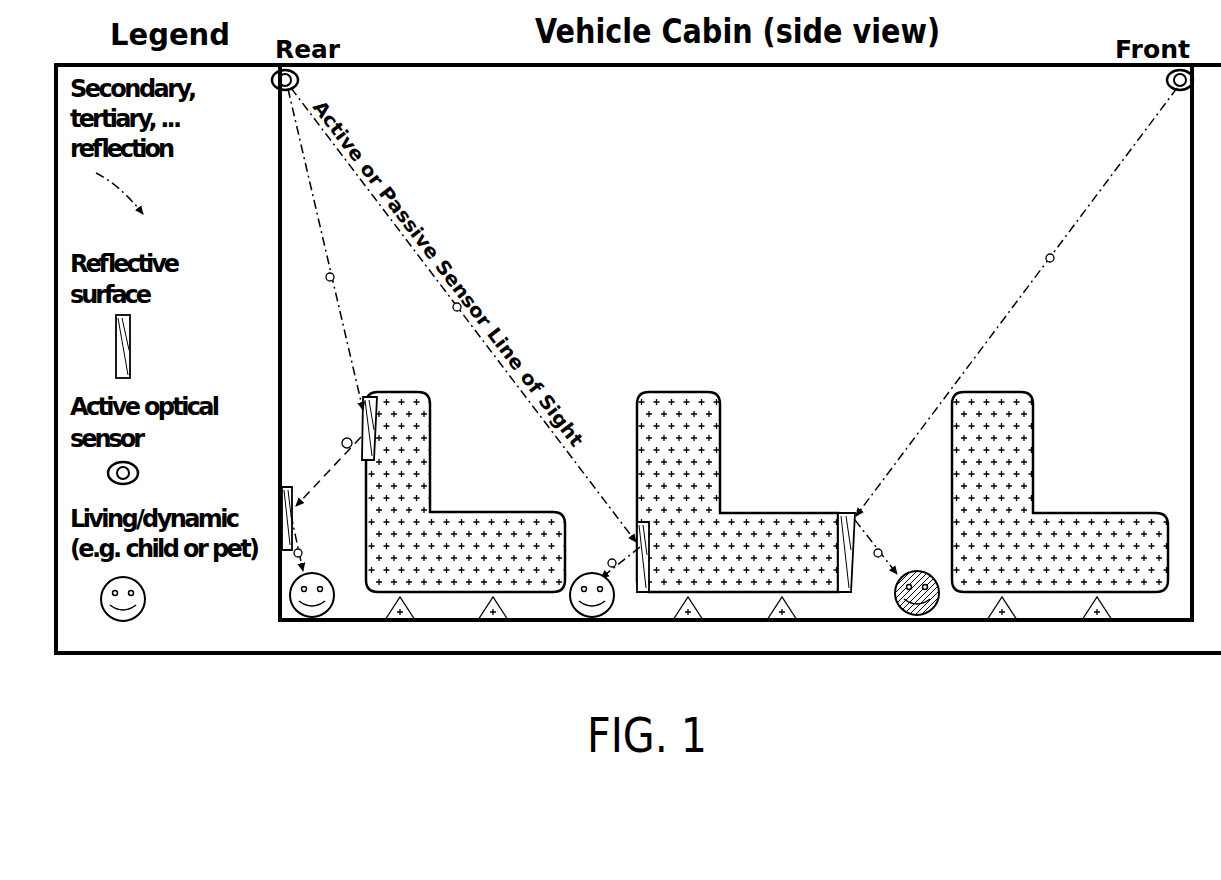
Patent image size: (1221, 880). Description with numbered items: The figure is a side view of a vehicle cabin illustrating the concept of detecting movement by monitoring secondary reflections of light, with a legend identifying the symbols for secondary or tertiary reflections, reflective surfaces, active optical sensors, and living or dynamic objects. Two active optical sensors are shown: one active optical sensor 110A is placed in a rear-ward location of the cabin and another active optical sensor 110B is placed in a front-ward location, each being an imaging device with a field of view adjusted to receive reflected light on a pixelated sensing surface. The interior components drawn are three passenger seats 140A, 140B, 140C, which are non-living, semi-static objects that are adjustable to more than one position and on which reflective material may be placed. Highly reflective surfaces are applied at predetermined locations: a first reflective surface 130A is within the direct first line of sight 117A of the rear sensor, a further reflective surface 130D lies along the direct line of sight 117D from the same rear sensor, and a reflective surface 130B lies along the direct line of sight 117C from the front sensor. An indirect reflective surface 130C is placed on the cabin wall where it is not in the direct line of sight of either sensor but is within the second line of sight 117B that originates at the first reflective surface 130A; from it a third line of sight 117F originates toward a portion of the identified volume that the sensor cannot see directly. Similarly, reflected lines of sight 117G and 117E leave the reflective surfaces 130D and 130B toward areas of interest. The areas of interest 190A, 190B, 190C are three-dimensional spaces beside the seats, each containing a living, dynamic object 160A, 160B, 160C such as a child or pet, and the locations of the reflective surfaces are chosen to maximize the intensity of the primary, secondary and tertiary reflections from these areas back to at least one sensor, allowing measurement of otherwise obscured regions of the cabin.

The active optical sensor 110A is at (300, 83).
The active optical sensor 110B is at (1170, 85).
The first line of sight 117A is at (334, 276).
The second line of sight 117B is at (344, 439).
The direct line of sight 117C is at (1055, 260).
The direct line of sight 117D is at (453, 305).
The reflected line of sight 117E is at (878, 558).
The third line of sight 117F is at (302, 557).
The reflected line of sight 117G is at (613, 568).
The first reflective surface 130A is at (368, 395).
The first reflective surface 130B is at (850, 512).
The indirect reflective surface 130C is at (292, 487).
The first reflective surface 130D is at (640, 522).
The passenger seat 140A is at (482, 568).
The passenger seat 140B is at (770, 568).
The passenger seat 140C is at (1094, 568).
The living, dynamic object 160A is at (305, 615).
The living, dynamic object 160B is at (580, 615).
The living, dynamic object 160C is at (937, 605).
The area of interest 190A is at (355, 533).
The area of interest 190B is at (618, 533).
The area of interest 190C is at (942, 551).